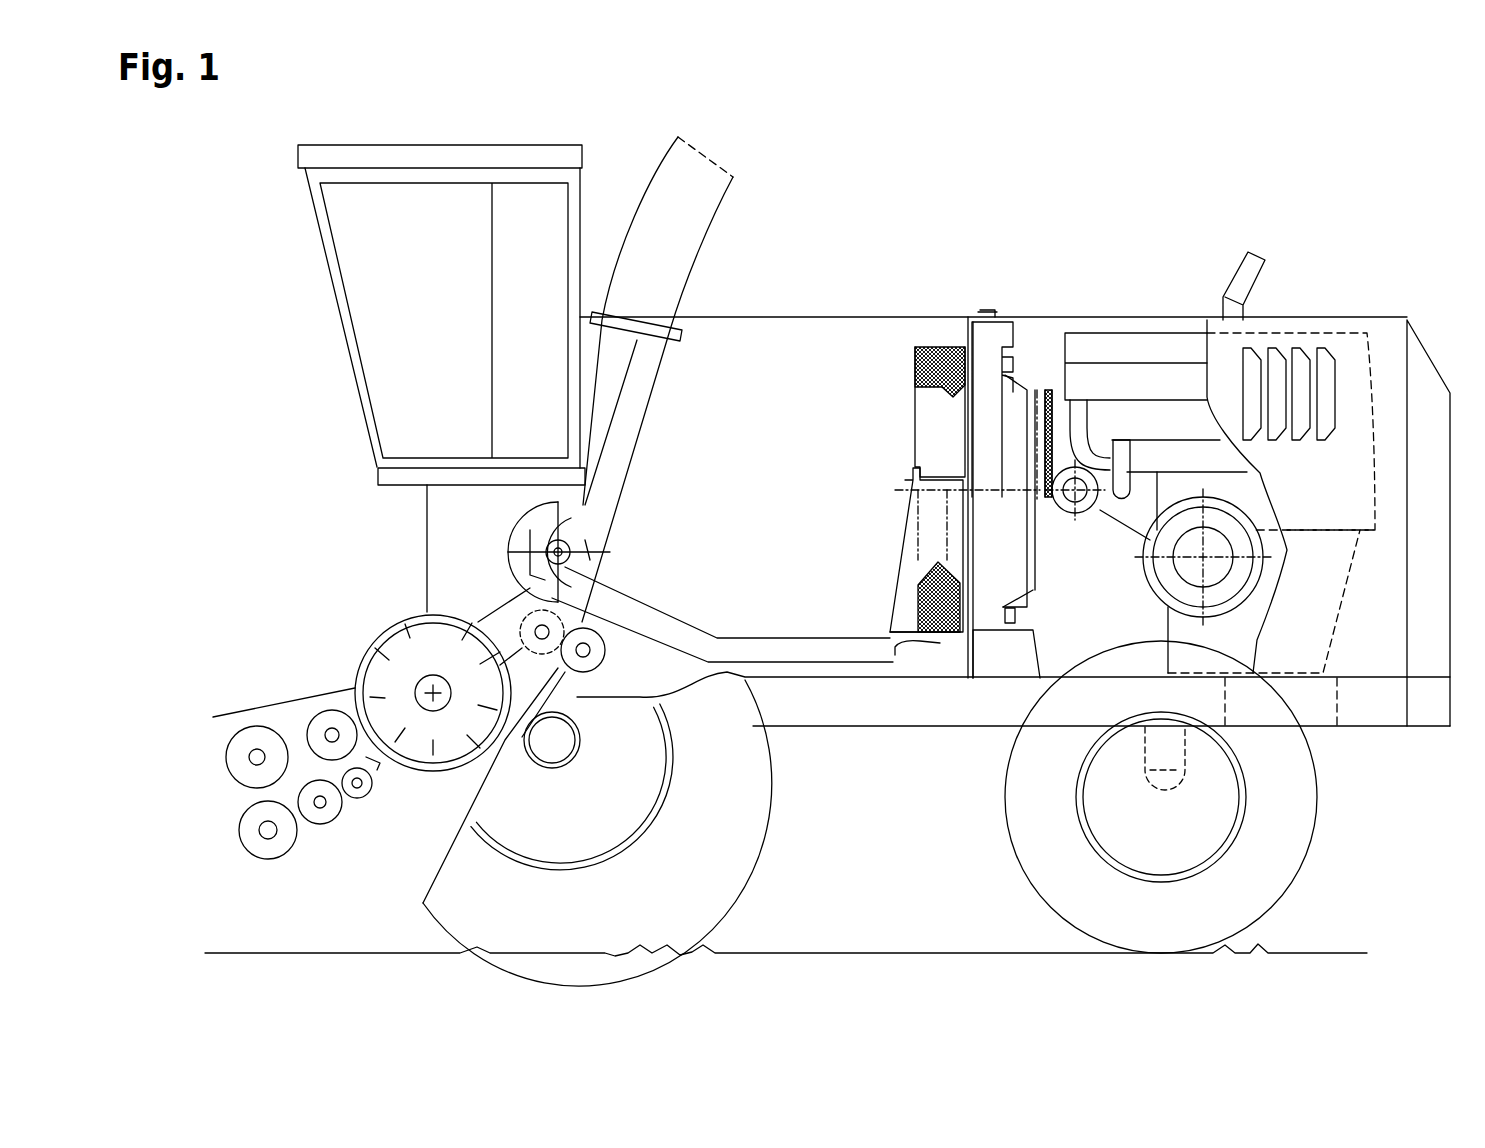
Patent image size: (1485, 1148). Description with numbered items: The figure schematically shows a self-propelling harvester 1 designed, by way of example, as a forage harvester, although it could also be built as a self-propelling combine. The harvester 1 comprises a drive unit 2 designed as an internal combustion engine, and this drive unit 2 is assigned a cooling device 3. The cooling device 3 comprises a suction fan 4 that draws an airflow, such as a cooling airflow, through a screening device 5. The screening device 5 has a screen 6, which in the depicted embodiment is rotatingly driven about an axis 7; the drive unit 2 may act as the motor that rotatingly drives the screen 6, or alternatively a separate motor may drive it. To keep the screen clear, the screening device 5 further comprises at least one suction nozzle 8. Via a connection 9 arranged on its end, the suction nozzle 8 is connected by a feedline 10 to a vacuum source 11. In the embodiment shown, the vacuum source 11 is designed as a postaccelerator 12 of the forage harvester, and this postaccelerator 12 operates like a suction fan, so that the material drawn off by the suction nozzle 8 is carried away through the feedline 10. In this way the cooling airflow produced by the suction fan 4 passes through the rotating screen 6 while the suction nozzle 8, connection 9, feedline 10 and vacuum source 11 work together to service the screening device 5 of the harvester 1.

The self-propelling harvester 1 is at (624, 192).
The drive unit 2 is at (1153, 387).
The cooling device 3 is at (1024, 350).
The suction fan 4 is at (1043, 393).
The screening device 5 is at (940, 449).
The screen 6 is at (898, 392).
The axis 7 is at (947, 637).
The suction nozzle 8 is at (897, 640).
The connection 9 is at (898, 642).
The feedline 10 is at (733, 650).
The vacuum source 11 is at (428, 587).
The postaccelerator 12 is at (548, 550).